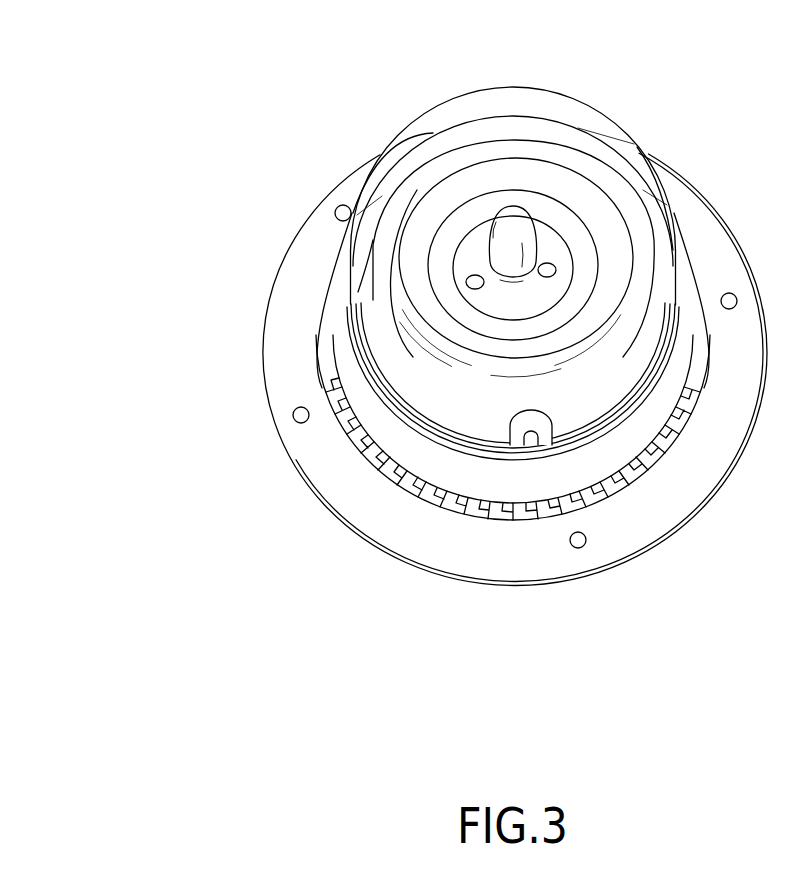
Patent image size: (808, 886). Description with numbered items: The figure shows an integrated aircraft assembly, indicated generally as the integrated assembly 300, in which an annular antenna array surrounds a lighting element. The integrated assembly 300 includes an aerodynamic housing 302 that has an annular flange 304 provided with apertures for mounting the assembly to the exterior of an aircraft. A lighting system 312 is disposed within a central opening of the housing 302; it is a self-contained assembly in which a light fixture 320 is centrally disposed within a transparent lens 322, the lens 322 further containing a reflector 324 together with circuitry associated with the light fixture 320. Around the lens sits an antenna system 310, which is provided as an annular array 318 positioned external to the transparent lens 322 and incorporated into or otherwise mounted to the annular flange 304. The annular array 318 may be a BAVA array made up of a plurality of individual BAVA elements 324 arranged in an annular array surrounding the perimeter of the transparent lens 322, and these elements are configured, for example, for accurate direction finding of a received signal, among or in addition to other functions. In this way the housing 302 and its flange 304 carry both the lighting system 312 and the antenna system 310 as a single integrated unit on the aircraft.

The integrated assembly 300 is at (185, 58).
The aerodynamic housing 302 is at (285, 471).
The annular flange 304 is at (706, 453).
The antenna system 310 is at (387, 490).
The lighting system 312 is at (419, 110).
The annular array 318 is at (467, 478).
The light fixture 320 is at (512, 214).
The transparent lens 322 is at (636, 150).
The reflector 324 is at (570, 142).